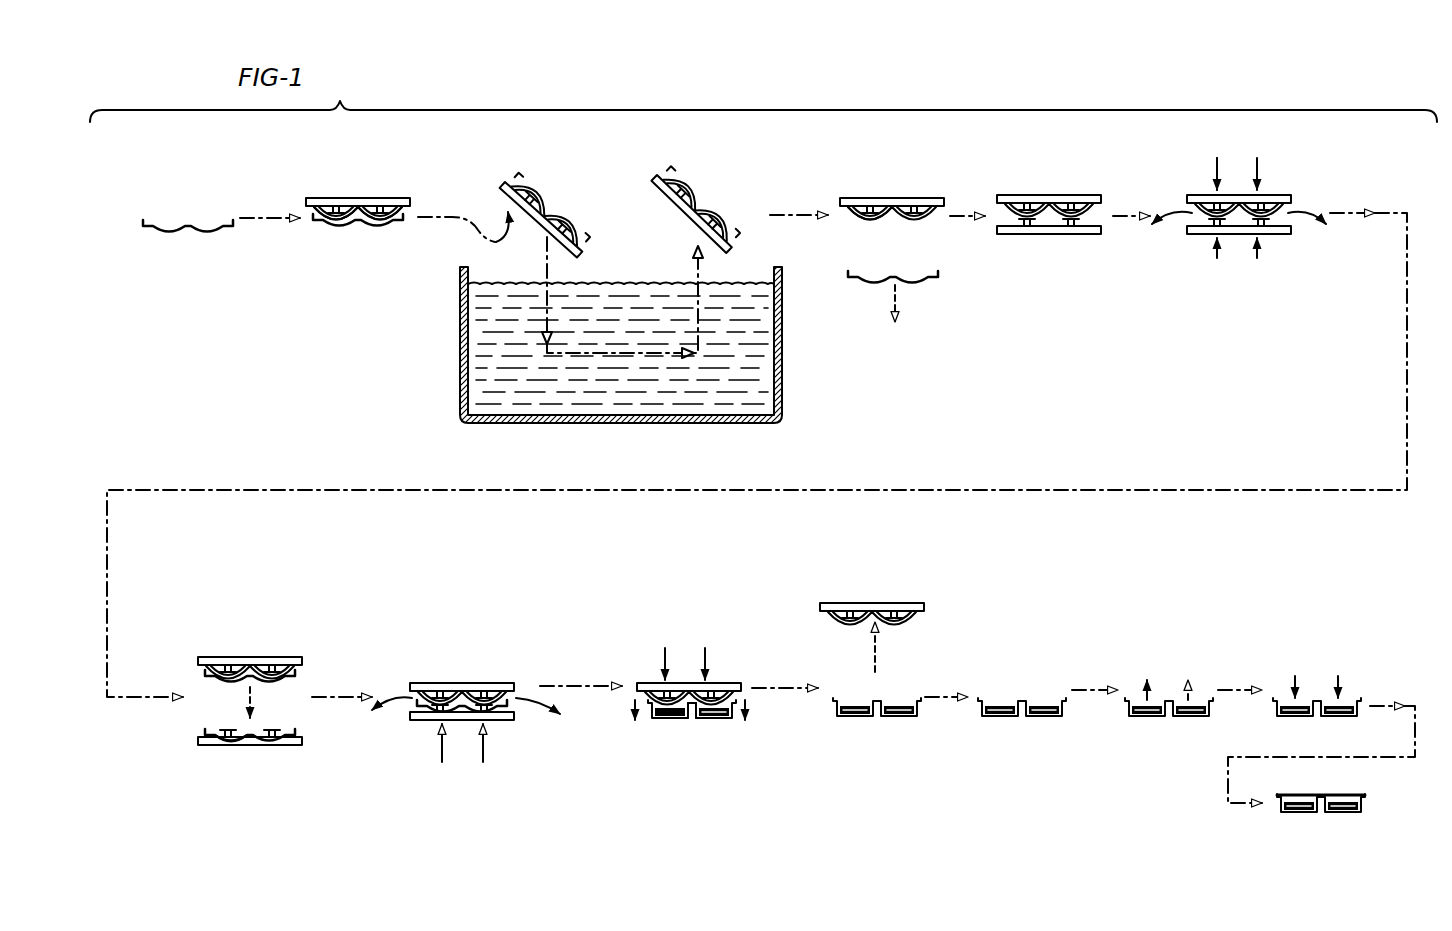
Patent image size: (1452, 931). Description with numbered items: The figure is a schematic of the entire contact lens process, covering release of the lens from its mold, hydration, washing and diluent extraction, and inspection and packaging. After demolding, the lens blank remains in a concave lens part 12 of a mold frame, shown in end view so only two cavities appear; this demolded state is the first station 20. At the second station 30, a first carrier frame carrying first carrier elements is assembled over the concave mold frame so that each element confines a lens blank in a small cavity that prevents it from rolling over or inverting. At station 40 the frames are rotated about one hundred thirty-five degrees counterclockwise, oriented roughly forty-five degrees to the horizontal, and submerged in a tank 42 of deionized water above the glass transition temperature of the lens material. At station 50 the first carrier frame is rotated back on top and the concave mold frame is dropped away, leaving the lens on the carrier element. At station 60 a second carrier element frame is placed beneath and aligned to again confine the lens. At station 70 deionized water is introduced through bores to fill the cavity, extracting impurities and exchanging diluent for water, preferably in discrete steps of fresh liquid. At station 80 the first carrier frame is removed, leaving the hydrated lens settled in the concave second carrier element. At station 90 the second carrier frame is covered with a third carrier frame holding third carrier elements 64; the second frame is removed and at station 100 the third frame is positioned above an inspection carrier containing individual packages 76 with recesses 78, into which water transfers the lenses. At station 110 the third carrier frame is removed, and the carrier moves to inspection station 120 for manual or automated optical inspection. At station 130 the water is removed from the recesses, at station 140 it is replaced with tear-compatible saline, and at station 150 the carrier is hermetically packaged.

The concave lens part 12 is at (336, 224).
The first station 20 is at (237, 166).
The second station 30 is at (407, 168).
The station 40 is at (723, 158).
The tank 42 is at (462, 368).
The station 50 is at (945, 156).
The station 60 is at (1100, 156).
The third carrier element 64 is at (480, 685).
The station 70 is at (1293, 158).
The individual package 76 is at (652, 720).
The recess 78 is at (682, 722).
The station 80 is at (315, 613).
The station 90 is at (527, 613).
The station 100 is at (745, 613).
The station 110 is at (930, 579).
The inspection station 120 is at (1065, 644).
The station 130 is at (1207, 644).
The station 140 is at (1362, 644).
The station 150 is at (1389, 772).